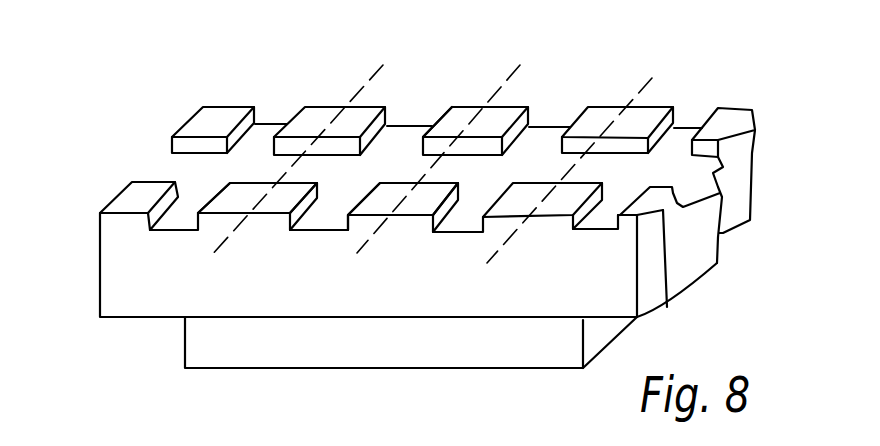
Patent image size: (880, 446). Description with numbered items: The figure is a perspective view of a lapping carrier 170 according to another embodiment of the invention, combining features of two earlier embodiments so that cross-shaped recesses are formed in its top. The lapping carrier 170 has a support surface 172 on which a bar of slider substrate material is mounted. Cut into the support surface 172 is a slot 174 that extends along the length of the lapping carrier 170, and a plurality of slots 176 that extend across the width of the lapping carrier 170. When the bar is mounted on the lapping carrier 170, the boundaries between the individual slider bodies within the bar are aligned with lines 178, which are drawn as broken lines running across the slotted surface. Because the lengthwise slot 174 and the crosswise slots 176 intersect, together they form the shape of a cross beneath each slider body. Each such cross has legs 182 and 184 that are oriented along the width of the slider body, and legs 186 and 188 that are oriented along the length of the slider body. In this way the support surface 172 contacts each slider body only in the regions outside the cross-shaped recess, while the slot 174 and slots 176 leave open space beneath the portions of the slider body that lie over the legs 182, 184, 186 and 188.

The lapping carrier 170 is at (88, 247).
The support surface 172 is at (215, 126).
The slot 174 is at (183, 170).
The slots 176 is at (266, 124).
The lines 178 is at (397, 43).
The leg 182 is at (312, 172).
The leg 184 is at (412, 168).
The leg 186 is at (322, 218).
The leg 188 is at (423, 125).